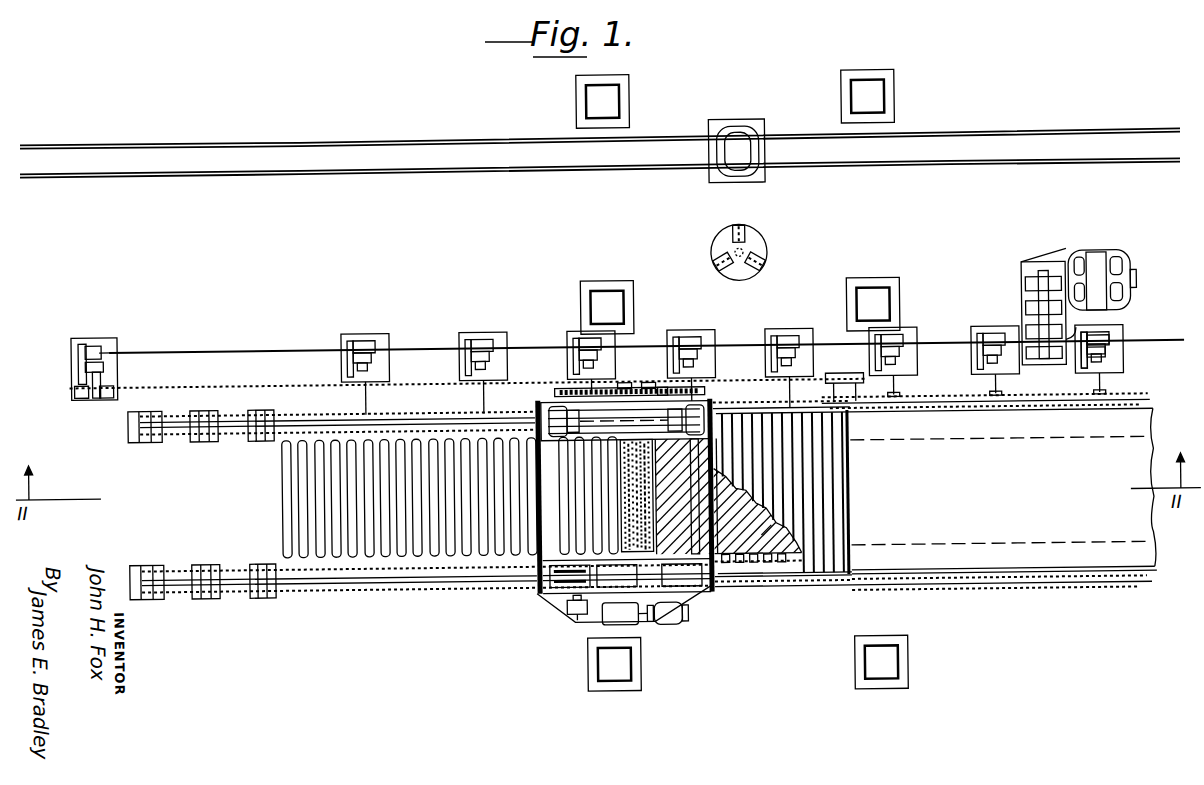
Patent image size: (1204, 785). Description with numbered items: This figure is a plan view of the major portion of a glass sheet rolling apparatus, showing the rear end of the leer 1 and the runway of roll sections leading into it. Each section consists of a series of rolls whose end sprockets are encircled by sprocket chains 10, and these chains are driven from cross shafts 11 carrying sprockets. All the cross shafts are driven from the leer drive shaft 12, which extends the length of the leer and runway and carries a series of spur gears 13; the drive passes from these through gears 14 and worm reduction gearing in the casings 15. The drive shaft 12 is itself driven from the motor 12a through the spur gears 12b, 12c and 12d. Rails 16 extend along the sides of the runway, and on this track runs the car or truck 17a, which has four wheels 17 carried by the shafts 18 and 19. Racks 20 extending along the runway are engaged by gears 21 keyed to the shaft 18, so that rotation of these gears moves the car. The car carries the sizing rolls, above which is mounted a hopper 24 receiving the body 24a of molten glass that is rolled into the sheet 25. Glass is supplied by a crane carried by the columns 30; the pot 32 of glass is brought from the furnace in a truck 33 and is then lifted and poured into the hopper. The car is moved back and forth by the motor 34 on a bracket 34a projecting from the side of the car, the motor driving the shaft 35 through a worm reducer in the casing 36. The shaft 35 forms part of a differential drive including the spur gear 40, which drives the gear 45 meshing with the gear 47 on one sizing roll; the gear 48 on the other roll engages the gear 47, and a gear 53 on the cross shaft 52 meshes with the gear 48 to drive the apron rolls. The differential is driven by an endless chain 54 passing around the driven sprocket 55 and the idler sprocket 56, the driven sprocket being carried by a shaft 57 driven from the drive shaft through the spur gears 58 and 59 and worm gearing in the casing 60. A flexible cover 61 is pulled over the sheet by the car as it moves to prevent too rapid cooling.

The rear end of the leer 1 is at (1112, 456).
The sprocket chains 10 is at (442, 423).
The cross shafts 11 is at (898, 390).
The leer drive shaft 12 is at (250, 347).
The motor 12a is at (1096, 268).
The spur gear 12b is at (1028, 272).
The spur gear 12c is at (1044, 305).
The spur gear 12d is at (1040, 340).
The spur gears 13 is at (1092, 358).
The gears 14 is at (1084, 362).
The casings 15 is at (1110, 362).
The rails 16 is at (234, 427).
The wheels 17 is at (535, 415).
The car or truck 17a is at (680, 607).
The shaft 18 is at (702, 528).
The shaft 19 is at (553, 545).
The racks 20 is at (228, 415).
The gears 21 is at (545, 408).
The hopper 24 is at (648, 502).
The body of molten glass 24a is at (646, 480).
The sheet 25 is at (765, 537).
The columns 30 is at (590, 99).
The pot 32 is at (736, 130).
The truck 33 is at (718, 183).
The motor 34 is at (613, 605).
The bracket 34a is at (637, 567).
The shaft 35 is at (577, 522).
The casing 36 is at (573, 617).
The spur gear 40 is at (560, 388).
The gear 45 is at (602, 392).
The gear 47 is at (627, 383).
The gear 48 is at (650, 383).
The cross shaft 52 is at (706, 525).
The gear 53 is at (662, 388).
The endless chain 54 is at (246, 382).
The driven sprocket 55 is at (82, 392).
The idler sprocket 56 is at (836, 376).
The shaft 57 is at (97, 393).
The spur gear 58 is at (79, 340).
The spur gear 59 is at (79, 370).
The casing 60 is at (106, 362).
The cover 61 is at (800, 507).